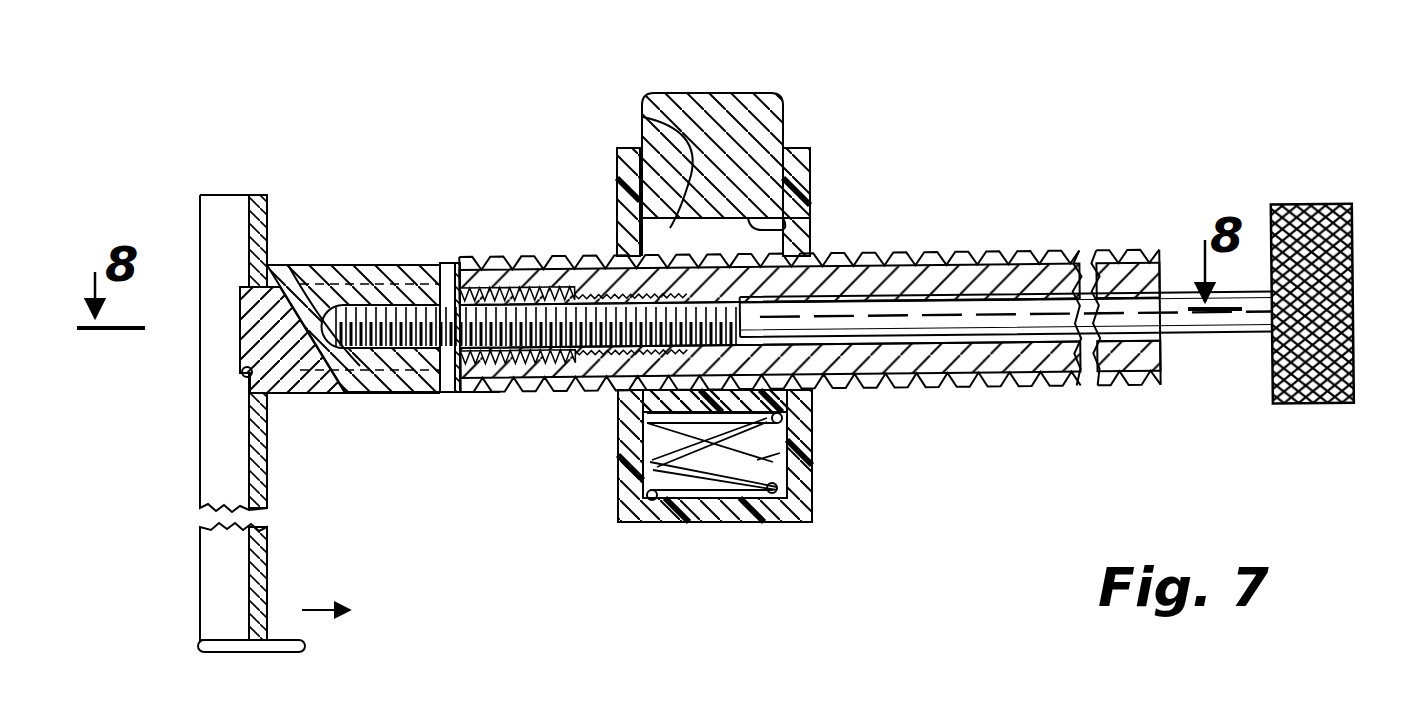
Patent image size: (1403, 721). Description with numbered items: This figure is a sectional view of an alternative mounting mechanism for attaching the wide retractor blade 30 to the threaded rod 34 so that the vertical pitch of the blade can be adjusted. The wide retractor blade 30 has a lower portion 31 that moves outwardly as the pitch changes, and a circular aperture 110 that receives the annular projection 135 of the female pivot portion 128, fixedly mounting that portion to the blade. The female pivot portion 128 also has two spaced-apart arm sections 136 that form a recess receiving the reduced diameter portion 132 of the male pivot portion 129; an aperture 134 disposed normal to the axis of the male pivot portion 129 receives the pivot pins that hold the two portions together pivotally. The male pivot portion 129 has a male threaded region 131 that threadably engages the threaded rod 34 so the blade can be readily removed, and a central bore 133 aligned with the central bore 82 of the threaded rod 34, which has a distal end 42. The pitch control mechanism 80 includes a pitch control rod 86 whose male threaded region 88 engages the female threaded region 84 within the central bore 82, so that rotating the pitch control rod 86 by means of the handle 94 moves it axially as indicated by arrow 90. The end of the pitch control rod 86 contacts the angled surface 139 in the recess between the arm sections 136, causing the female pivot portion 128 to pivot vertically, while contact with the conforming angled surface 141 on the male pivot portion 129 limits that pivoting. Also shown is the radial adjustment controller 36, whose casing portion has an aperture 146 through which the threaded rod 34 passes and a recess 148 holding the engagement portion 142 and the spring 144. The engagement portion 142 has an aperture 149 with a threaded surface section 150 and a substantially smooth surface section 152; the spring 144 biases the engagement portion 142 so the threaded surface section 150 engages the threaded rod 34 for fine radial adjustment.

The wide retractor blade 30 is at (212, 432).
The lower portion 31 is at (218, 655).
The threaded rod 34 is at (912, 242).
The radial adjustment controller 36 is at (820, 156).
The distal end 42 is at (1133, 252).
The pitch control mechanism 80 is at (1206, 343).
The central bore 82 is at (1036, 340).
The female threaded region 84 is at (612, 262).
The pitch control rod 86 is at (1036, 312).
The male threaded region 88 is at (536, 290).
The arrow 90 is at (318, 610).
The handle 94 is at (1338, 214).
The circular aperture 110 is at (244, 368).
The female pivot portion 128 is at (282, 400).
The male pivot portion 129 is at (426, 400).
The male threaded region 131 is at (480, 372).
The reduced diameter portion 132 is at (400, 290).
The central bore 133 is at (410, 265).
The aperture 134 is at (360, 366).
The annular projection 135 is at (243, 303).
The spaced-apart arm sections 136 is at (378, 287).
The angled surface 139 is at (326, 300).
The angled surface 141 is at (243, 290).
The engagement portion 142 is at (731, 95).
The spring 144 is at (768, 499).
The aperture 146 is at (806, 233).
The recess 148 is at (758, 462).
The aperture 149 is at (643, 117).
The threaded surface section 150 is at (783, 418).
The substantially smooth surface section 152 is at (792, 226).